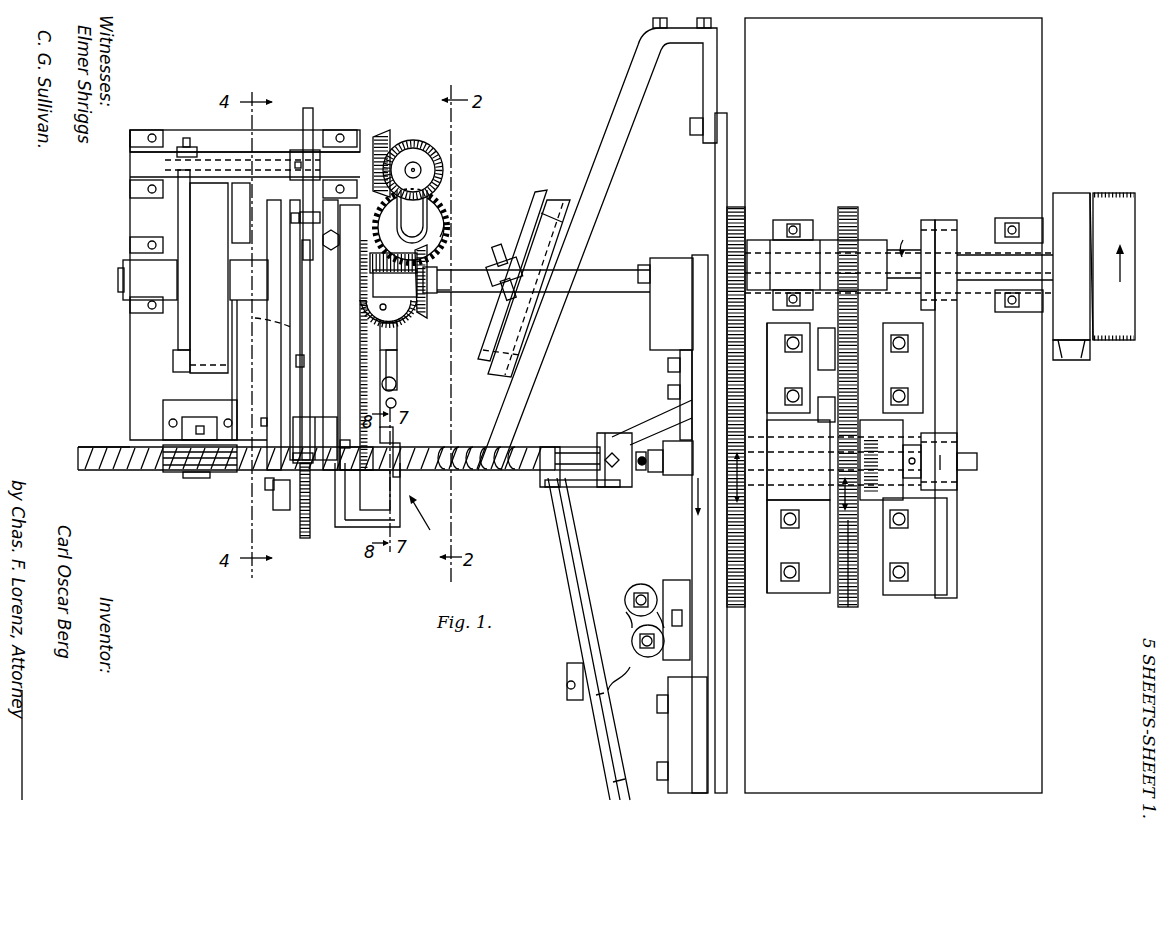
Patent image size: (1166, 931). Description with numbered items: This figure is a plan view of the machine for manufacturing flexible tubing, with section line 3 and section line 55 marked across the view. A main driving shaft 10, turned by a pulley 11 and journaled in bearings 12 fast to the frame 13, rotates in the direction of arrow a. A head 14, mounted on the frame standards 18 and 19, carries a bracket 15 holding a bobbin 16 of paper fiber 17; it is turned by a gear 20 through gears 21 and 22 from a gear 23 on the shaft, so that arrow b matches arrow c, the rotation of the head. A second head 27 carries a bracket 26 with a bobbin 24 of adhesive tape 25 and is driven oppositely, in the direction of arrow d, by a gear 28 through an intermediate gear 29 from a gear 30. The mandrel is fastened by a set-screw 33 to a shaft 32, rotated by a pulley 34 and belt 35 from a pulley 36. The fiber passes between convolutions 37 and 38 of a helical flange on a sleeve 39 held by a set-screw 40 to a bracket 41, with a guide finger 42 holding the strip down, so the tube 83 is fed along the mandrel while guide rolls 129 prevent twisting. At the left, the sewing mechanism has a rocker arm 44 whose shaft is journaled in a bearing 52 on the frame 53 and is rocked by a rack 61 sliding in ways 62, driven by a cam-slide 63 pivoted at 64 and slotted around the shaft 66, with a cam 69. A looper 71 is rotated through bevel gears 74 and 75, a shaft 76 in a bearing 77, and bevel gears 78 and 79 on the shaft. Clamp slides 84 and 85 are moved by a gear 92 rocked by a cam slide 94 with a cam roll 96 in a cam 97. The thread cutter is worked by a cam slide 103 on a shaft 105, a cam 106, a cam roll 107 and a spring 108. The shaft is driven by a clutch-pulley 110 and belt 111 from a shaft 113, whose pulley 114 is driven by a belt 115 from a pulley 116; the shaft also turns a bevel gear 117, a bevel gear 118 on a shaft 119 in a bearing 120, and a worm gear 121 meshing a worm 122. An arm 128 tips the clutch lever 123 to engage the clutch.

The shaft 3 is at (644, 476).
The main driving shaft 10 is at (1137, 263).
The pulley 11 is at (1128, 331).
The bearings 12 is at (807, 224).
The frame 13 is at (893, 405).
The head 14 is at (692, 548).
The bracket 15 is at (649, 635).
The bobbin 16 is at (620, 723).
The strip of paper fiber 17 is at (512, 451).
The frame standard 18 is at (758, 590).
The frame standard 19 is at (873, 598).
The gear 20 is at (845, 610).
The gear 21 is at (837, 404).
The gear 22 is at (837, 331).
The gear 23 is at (860, 211).
The bobbin 24 is at (542, 191).
The strip of adhesive tape 25 is at (494, 397).
The bracket 26 is at (608, 120).
The head 27 is at (716, 190).
The gear 28 is at (747, 628).
The intermediate gear 29 is at (727, 372).
The gear 30 is at (747, 214).
The shaft 32 is at (660, 470).
The set-screw 33 is at (642, 468).
The pulley 34 is at (960, 442).
The belt 35 is at (955, 390).
The pulley 36 is at (953, 308).
The convolution 37 is at (543, 474).
The convolution 38 is at (555, 450).
The sleeve 39 is at (583, 446).
The set-screw 40 is at (618, 460).
The bracket 41 is at (653, 413).
The guide finger 42 is at (588, 488).
The rocker arm 44 is at (388, 475).
The bearing 52 is at (327, 453).
The frame 53 is at (207, 134).
The pin 55 is at (407, 463).
The rack 61 is at (278, 493).
The ways 62 is at (270, 483).
The cam-slide 63 is at (270, 374).
The pivot 64 is at (215, 420).
The shaft 66 is at (394, 327).
The cam 69 is at (290, 231).
The looper 71 is at (393, 440).
The bevel gear 74 is at (397, 400).
The bevel gear 75 is at (397, 386).
The shaft 76 is at (388, 297).
The bearing 77 is at (397, 361).
The bevel gear 78 is at (419, 315).
The bevel gear 79 is at (442, 302).
The tube 83 is at (97, 473).
The slide 84 is at (360, 482).
The slide 85 is at (356, 458).
The gear 92 is at (305, 530).
The cam slide 94 is at (302, 367).
The cam roll 96 is at (260, 317).
The cam 97 is at (300, 256).
The cam slide 103 is at (313, 193).
The shaft 105 is at (270, 155).
The cam 106 is at (313, 113).
The cam roll 107 is at (292, 217).
The spring 108 is at (345, 440).
The clutch-pulley 110 is at (186, 360).
The belt 111 is at (208, 192).
The shaft 113 is at (620, 278).
The pulley 114 is at (1080, 357).
The belt 115 is at (1091, 347).
The pulley 116 is at (1082, 193).
The bevel gear 117 is at (382, 134).
The bevel gear 118 is at (442, 173).
The shaft 119 is at (412, 167).
The bearing 120 is at (443, 211).
The worm gear 121 is at (447, 240).
The worm 122 is at (423, 263).
The lever 123 is at (176, 326).
The arm 128 is at (183, 218).
The guide rolls 129 is at (177, 474).
The arrow a is at (659, 381).
The arrow b is at (843, 487).
The arrow c is at (697, 507).
The arrow d is at (747, 477).